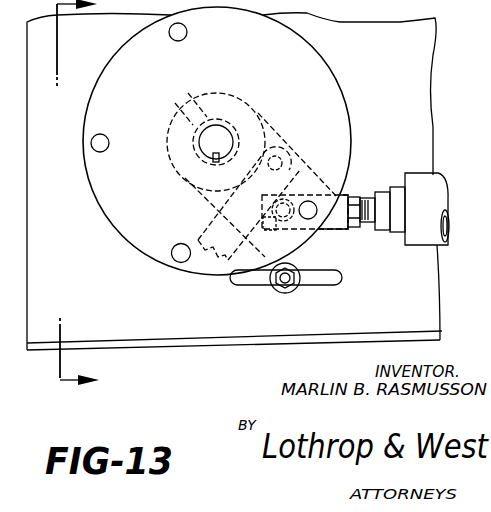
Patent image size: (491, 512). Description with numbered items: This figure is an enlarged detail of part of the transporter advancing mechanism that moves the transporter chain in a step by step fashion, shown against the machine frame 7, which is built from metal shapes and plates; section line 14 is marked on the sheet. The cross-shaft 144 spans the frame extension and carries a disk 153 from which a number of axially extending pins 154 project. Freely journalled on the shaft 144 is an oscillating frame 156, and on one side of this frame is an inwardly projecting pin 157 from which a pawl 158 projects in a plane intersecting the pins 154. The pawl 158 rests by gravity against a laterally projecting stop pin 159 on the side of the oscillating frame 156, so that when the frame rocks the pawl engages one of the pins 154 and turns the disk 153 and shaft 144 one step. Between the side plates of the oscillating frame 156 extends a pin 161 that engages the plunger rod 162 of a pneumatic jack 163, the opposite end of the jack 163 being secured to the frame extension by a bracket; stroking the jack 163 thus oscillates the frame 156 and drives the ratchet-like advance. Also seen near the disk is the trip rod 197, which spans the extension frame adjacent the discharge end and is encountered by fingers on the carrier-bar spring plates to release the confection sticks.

The frame 7 is at (234, 181).
The section line 14 is at (64, 195).
The cross-shaft 144 is at (219, 126).
The disk 153 is at (330, 83).
The axially extending pins 154 is at (181, 263).
The oscillating frame 156 is at (271, 136).
The inwardly projecting pin 157 is at (281, 160).
The pawl 158 is at (201, 228).
The stop pin 159 is at (300, 243).
The pin 161 is at (305, 173).
The plunger rod 162 is at (368, 197).
The pneumatic jack 163 is at (438, 180).
The trip rod 197 is at (285, 284).